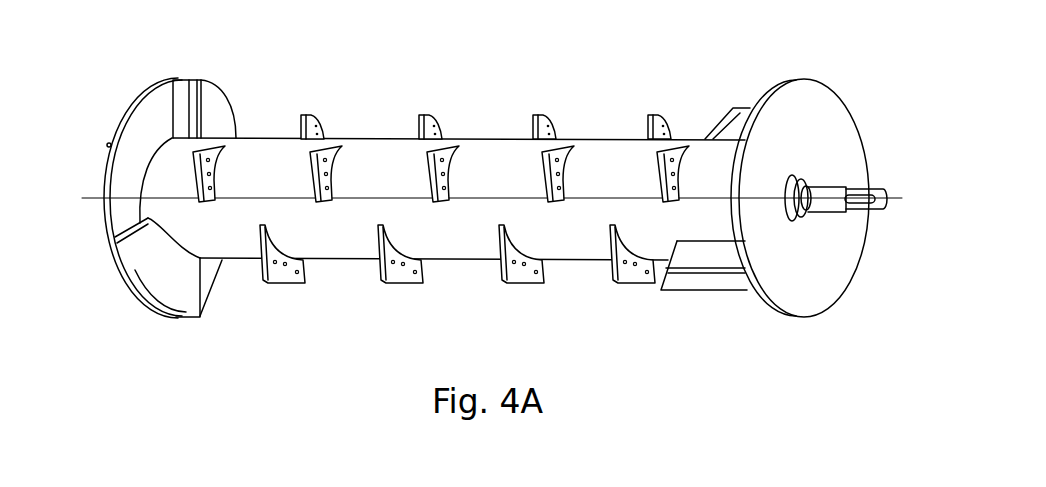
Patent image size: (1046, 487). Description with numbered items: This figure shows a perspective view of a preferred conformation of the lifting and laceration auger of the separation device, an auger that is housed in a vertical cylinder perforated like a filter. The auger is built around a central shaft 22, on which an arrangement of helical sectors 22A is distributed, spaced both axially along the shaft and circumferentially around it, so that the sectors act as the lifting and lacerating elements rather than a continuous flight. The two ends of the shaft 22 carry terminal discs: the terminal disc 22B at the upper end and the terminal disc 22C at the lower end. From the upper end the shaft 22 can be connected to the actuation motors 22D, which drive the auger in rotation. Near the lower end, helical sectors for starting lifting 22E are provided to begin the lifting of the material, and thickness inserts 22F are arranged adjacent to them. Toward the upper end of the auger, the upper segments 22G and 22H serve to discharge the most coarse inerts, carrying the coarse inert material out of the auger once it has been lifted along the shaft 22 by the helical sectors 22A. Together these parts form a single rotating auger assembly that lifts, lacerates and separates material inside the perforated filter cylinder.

The shaft 22 is at (597, 158).
The helical sectors 22A is at (427, 177).
The upper end terminal disc 22B is at (813, 293).
The lower end terminal disc 22C is at (131, 133).
The actuation motors 22D is at (853, 190).
The helical sectors for starting lifting 22E is at (212, 103).
The thickness inserts 22F is at (183, 102).
The upper segment for discharging coarse inerts 22G is at (730, 130).
The upper segment for discharging coarse inerts 22H is at (706, 272).